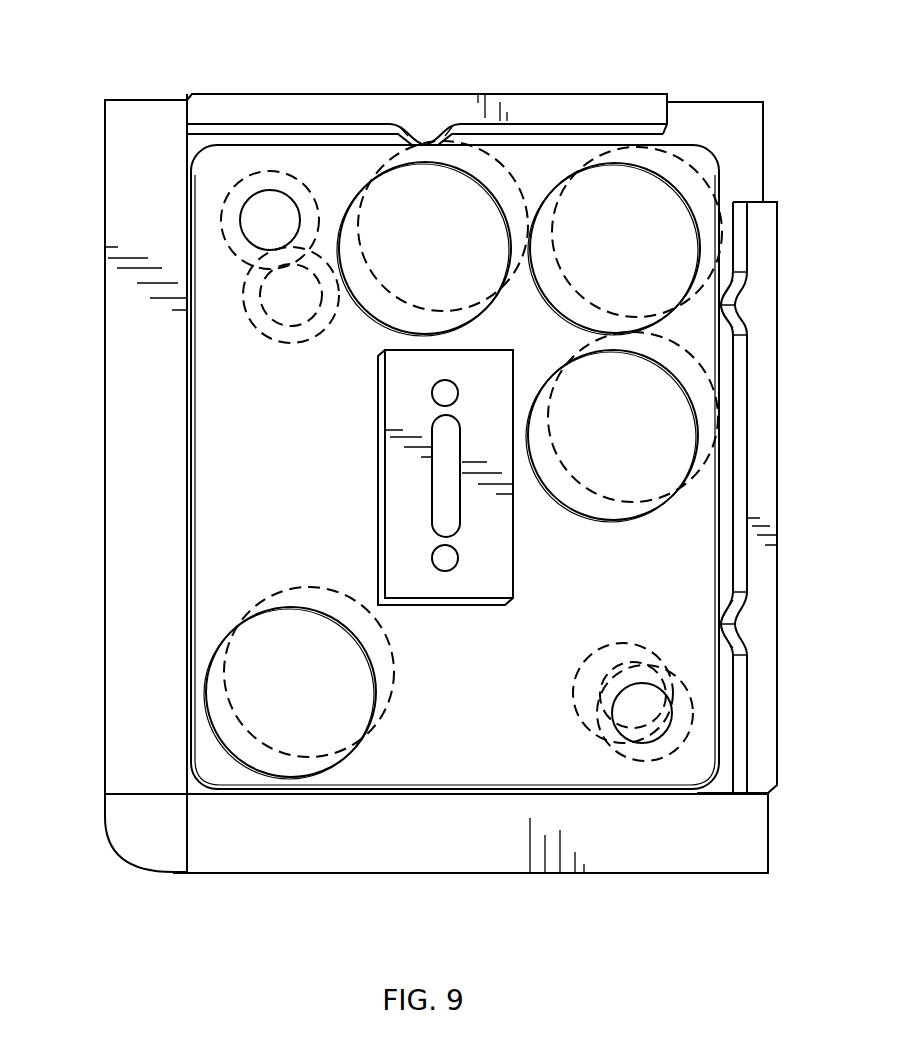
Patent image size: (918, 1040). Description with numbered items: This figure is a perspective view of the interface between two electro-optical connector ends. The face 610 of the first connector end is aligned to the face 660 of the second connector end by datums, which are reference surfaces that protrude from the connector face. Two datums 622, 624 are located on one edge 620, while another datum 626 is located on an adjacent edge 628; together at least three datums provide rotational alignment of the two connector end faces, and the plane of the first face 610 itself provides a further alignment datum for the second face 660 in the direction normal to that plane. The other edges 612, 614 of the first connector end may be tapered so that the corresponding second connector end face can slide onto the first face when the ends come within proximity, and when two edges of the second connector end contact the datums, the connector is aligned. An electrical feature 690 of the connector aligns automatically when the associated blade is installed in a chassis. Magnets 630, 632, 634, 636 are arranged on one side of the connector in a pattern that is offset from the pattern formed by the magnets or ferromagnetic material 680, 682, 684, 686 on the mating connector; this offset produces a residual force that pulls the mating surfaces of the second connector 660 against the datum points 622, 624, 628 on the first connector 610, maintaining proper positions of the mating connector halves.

The face of first connector end 610 is at (709, 123).
The edge of first connector end 612 is at (145, 632).
The edge of first connector end 614 is at (278, 850).
The edge 620 is at (760, 462).
The datum 622 is at (727, 315).
The datum 624 is at (727, 629).
The datum 626 is at (574, 112).
The adjacent edge 628 is at (425, 143).
The magnet 630 is at (683, 163).
The magnet 632 is at (400, 157).
The magnet 634 is at (690, 365).
The magnet 636 is at (283, 600).
The face of second connector end 660 is at (488, 757).
The magnet or ferromagnetic material 680 is at (672, 212).
The magnet or ferromagnetic material 682 is at (358, 195).
The magnet or ferromagnetic material 684 is at (682, 421).
The magnet or ferromagnetic material 686 is at (207, 673).
The electrical feature 690 is at (448, 473).